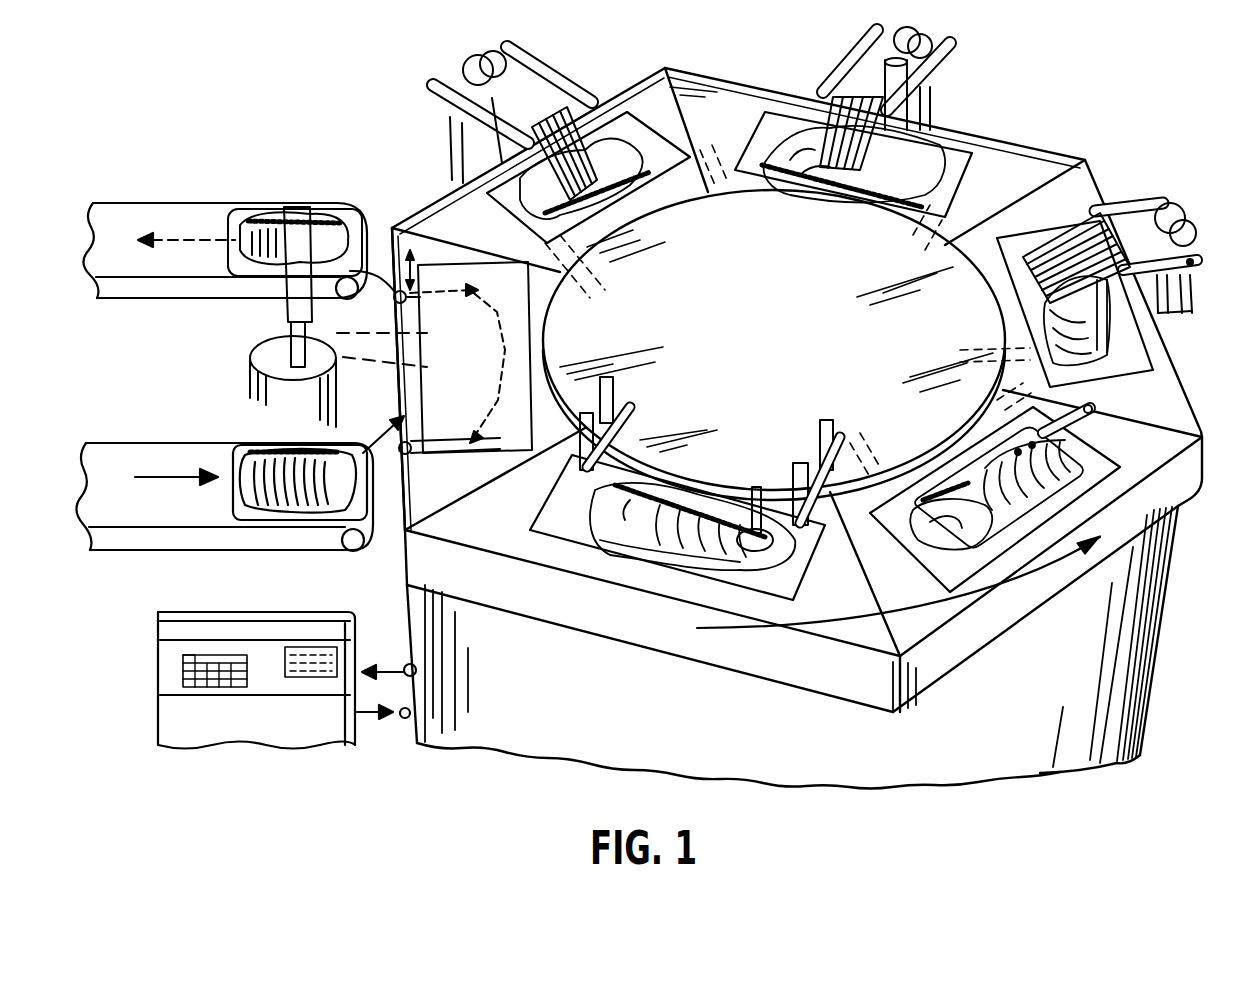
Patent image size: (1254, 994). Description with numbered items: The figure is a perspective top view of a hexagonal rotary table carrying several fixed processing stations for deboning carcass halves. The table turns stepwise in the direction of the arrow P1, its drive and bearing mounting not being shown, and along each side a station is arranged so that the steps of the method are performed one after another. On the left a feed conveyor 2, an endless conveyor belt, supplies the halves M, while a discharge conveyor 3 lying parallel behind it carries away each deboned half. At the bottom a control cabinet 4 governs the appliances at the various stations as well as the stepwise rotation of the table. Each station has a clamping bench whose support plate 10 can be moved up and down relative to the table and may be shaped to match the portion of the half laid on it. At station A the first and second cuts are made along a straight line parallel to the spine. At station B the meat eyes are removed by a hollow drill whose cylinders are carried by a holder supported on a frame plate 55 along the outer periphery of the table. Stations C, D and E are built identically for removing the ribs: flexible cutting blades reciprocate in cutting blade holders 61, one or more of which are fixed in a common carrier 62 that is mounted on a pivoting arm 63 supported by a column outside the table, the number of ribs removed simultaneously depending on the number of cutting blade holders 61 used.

The feed conveyor 2 is at (152, 445).
The discharge conveyor 3 is at (188, 212).
The control cabinet 4 is at (272, 622).
The support plate 10 is at (618, 212).
The frame plate 55 is at (798, 357).
The cutting blade holder 61 is at (1085, 215).
The common carrier 62 is at (1147, 197).
The arm 63 is at (1182, 312).
The half M is at (262, 455).
The station A is at (612, 611).
The station B is at (1120, 528).
The station C is at (1124, 252).
The station D is at (896, 98).
The station E is at (515, 115).
The arrow P1 is at (850, 625).